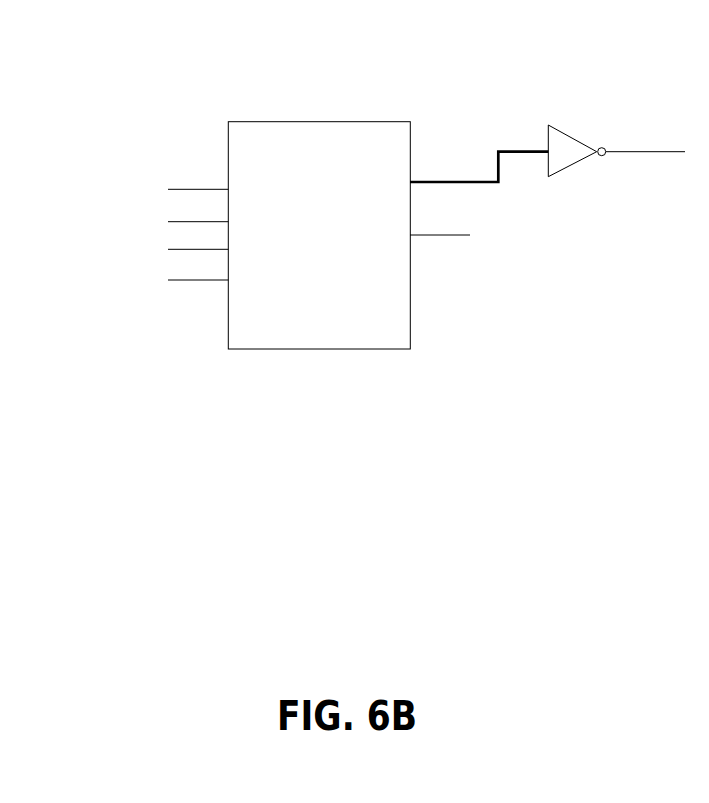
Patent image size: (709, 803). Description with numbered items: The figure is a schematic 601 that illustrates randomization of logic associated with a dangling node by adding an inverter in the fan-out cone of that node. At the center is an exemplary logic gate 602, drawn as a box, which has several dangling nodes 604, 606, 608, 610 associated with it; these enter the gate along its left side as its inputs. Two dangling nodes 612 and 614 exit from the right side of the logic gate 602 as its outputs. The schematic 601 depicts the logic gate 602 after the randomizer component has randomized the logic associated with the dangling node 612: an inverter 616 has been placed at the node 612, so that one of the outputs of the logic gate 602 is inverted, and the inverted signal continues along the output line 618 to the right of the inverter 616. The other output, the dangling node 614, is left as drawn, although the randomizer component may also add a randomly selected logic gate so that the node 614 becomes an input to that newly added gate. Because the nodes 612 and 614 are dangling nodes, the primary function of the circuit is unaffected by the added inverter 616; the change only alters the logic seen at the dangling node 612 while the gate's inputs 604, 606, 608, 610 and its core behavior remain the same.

The schematic 601 is at (216, 52).
The logic gate 602 is at (319, 349).
The dangling node 604 is at (168, 189).
The dangling node 606 is at (183, 222).
The dangling node 608 is at (183, 249).
The dangling node 610 is at (168, 280).
The dangling node 612 is at (497, 180).
The dangling node 614 is at (462, 235).
The inverter 616 is at (573, 137).
The inverted output e' wire 618 is at (642, 152).